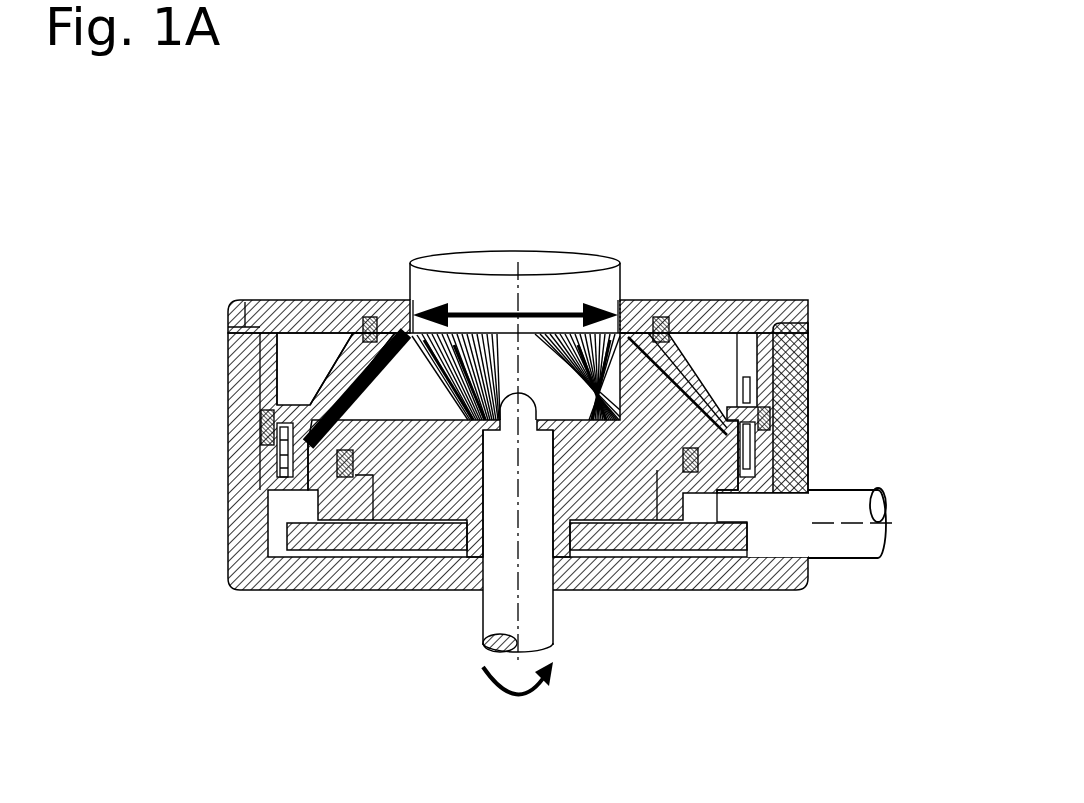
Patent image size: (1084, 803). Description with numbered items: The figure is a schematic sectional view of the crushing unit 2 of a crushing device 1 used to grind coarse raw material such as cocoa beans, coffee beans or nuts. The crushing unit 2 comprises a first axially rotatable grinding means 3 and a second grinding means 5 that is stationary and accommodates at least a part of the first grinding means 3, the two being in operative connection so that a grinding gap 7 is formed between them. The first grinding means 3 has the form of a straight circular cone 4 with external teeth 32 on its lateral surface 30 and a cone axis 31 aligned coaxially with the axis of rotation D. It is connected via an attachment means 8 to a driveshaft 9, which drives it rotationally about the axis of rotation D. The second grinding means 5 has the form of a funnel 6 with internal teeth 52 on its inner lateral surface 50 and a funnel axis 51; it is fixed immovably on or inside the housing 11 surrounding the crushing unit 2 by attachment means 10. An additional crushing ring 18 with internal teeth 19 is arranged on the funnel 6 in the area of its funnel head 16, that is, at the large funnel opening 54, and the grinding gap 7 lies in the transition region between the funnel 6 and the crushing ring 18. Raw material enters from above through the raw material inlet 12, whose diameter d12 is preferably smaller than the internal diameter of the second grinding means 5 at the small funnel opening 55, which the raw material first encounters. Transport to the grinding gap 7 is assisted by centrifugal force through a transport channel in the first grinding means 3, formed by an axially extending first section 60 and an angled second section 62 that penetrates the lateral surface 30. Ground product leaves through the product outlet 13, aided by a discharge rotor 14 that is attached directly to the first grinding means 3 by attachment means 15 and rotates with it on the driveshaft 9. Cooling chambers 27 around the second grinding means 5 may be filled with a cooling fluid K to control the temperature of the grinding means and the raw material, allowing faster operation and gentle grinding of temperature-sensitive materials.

The crushing device 1 is at (168, 738).
The crushing unit 2 is at (726, 277).
The first axially rotatable grinding means 3 is at (694, 280).
The straight circular cone 4 is at (650, 333).
The second grinding means 5 is at (713, 298).
The funnel 6 is at (690, 333).
The grinding gap 7 is at (741, 380).
The attachment means 8 is at (455, 313).
The driveshaft 9 is at (527, 598).
The attachment means 10 is at (363, 318).
The housing 11 is at (283, 382).
The raw material inlet 12 is at (484, 207).
The product outlet 13 is at (843, 500).
The discharge rotor 14 is at (285, 525).
The attachment means 15 is at (715, 435).
The funnel head 16 is at (412, 436).
The large funnel opening 54 is at (277, 437).
The crushing ring 18 is at (191, 561).
The internal teeth 19 is at (240, 493).
The cooling chambers 27 is at (499, 398).
The cooling fluid K is at (740, 362).
The lateral surface 30 is at (589, 243).
The external teeth 32 is at (622, 337).
The cone axis 31 is at (554, 245).
The funnel axis 51 is at (525, 365).
The inner lateral surface 50 is at (291, 332).
The internal teeth 52 is at (433, 395).
The small funnel opening 55 is at (378, 318).
The first section 60 is at (270, 313).
The second section 62 is at (353, 333).
The diameter of the raw material inlet d12 is at (556, 318).
The axis of rotation D is at (518, 705).